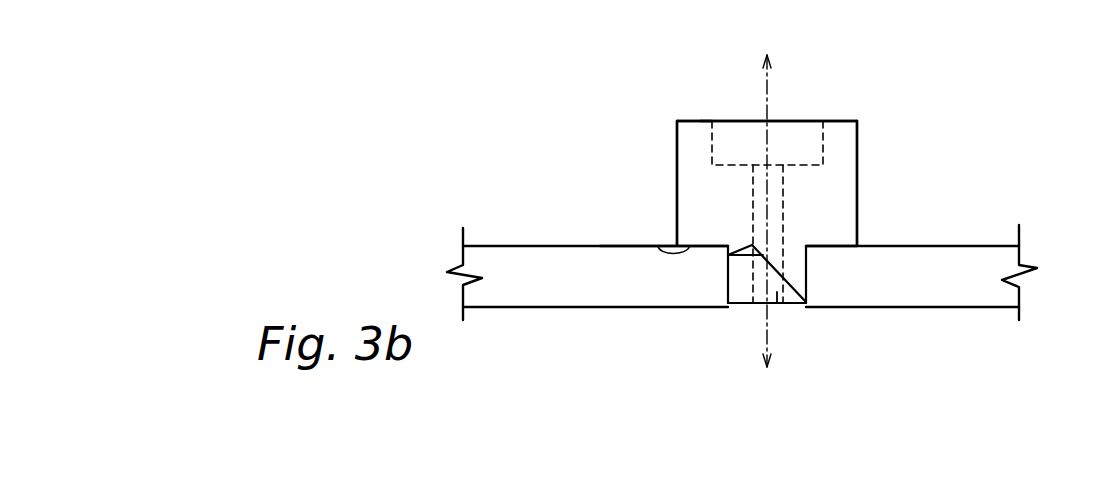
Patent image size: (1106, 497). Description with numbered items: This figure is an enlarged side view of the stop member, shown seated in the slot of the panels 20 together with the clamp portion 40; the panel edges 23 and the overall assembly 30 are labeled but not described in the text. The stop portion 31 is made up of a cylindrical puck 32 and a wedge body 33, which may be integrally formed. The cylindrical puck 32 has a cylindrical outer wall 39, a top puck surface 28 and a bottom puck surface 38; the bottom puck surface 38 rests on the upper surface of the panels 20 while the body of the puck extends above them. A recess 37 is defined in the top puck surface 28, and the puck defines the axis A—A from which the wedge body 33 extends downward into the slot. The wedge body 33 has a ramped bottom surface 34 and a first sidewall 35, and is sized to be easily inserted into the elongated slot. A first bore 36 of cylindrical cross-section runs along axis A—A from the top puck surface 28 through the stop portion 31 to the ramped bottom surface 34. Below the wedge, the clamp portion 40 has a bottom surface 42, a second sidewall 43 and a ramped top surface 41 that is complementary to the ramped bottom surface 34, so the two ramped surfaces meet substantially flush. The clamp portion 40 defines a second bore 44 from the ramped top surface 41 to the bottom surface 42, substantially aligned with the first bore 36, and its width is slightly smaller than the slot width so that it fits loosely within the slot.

The panels 20 is at (510, 250).
The sheet edge 23 is at (732, 303).
The top puck surface 28 is at (690, 121).
The fastener 30 is at (877, 82).
The stop portion 31 is at (857, 165).
The cylindrical puck 32 is at (848, 130).
The wedge body 33 is at (797, 272).
The ramped bottom surface 34 is at (727, 263).
The first sidewall 35 is at (807, 258).
The first bore 36 is at (757, 188).
The recess 37 is at (812, 133).
The bottom puck surface 38 is at (658, 246).
The cylindrical outer wall 39 is at (678, 128).
The clamp portion 40 is at (733, 285).
The ramped top surface 41 is at (769, 249).
The bottom surface 42 is at (757, 303).
The second sidewall 43 is at (727, 272).
The second bore 44 is at (777, 293).